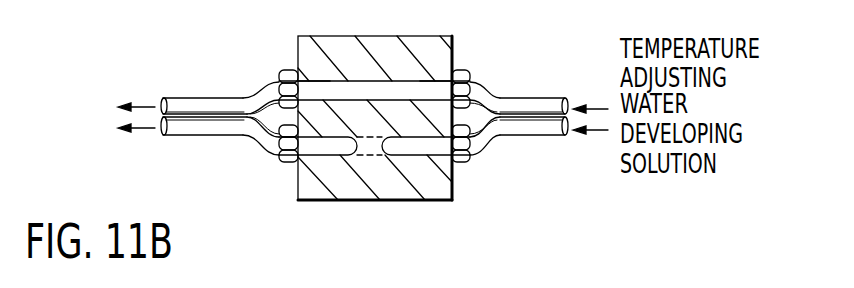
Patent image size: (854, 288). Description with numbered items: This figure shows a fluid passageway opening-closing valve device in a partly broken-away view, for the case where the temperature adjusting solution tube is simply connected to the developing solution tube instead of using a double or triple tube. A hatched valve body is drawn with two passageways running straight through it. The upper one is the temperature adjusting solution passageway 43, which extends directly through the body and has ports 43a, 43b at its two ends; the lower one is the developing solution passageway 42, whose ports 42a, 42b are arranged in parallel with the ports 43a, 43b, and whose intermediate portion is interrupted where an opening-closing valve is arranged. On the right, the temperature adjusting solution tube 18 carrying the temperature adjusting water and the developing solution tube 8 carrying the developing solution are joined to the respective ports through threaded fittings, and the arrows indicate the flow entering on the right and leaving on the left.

The developing solution pipe 8 is at (543, 130).
The temperature adjusting water pipe 18 is at (544, 108).
The developing solution passageway 42 is at (374, 188).
The port of the developing solution passageway 42a is at (428, 153).
The port of the developing solution passageway 42b is at (300, 157).
The temperature adjusting solution passageway 43 is at (374, 50).
The port of the temperature adjusting solution passageway 43a is at (418, 80).
The port of the temperature adjusting solution passageway 43b is at (306, 80).